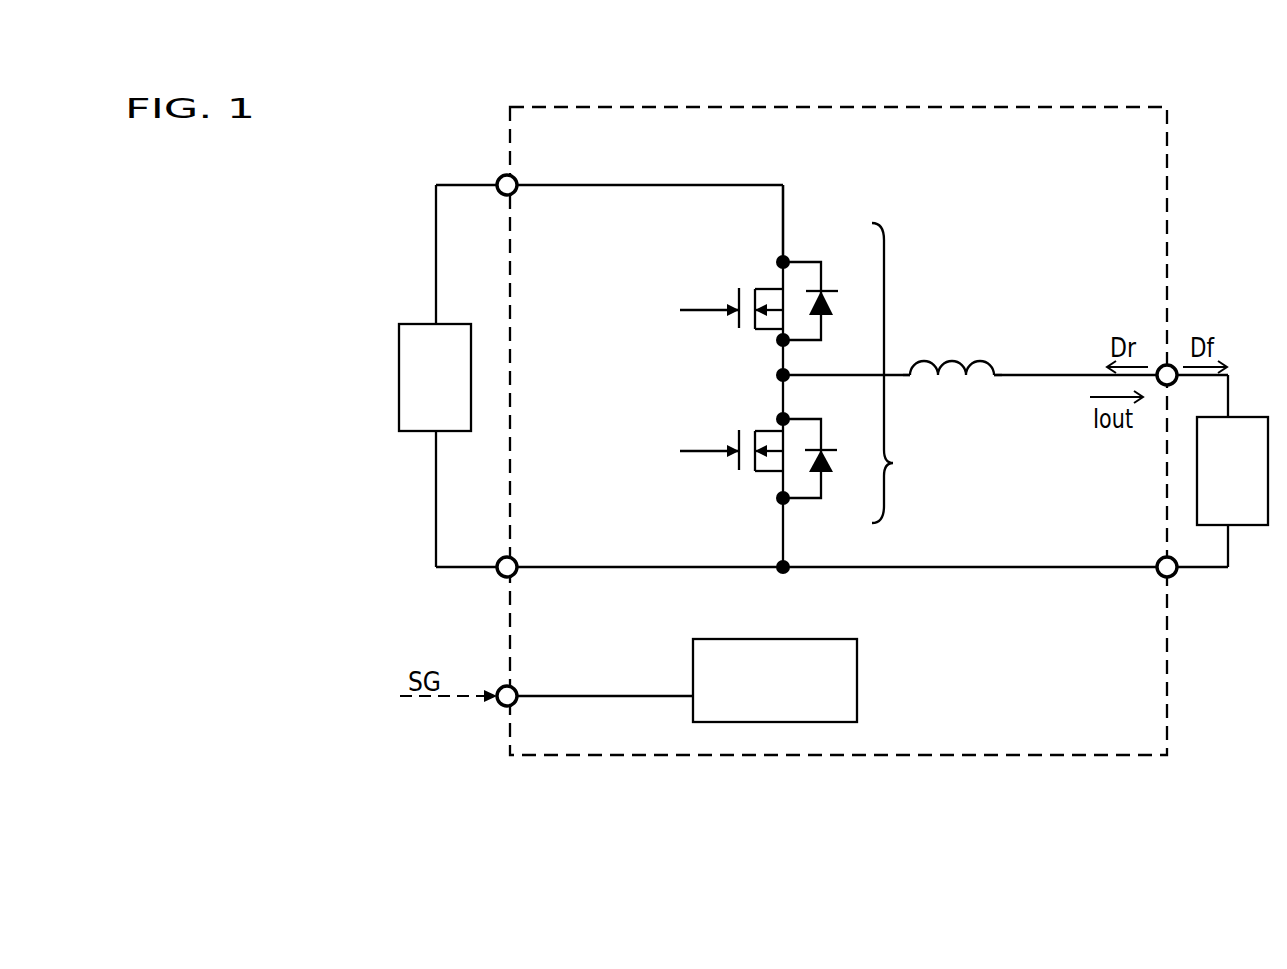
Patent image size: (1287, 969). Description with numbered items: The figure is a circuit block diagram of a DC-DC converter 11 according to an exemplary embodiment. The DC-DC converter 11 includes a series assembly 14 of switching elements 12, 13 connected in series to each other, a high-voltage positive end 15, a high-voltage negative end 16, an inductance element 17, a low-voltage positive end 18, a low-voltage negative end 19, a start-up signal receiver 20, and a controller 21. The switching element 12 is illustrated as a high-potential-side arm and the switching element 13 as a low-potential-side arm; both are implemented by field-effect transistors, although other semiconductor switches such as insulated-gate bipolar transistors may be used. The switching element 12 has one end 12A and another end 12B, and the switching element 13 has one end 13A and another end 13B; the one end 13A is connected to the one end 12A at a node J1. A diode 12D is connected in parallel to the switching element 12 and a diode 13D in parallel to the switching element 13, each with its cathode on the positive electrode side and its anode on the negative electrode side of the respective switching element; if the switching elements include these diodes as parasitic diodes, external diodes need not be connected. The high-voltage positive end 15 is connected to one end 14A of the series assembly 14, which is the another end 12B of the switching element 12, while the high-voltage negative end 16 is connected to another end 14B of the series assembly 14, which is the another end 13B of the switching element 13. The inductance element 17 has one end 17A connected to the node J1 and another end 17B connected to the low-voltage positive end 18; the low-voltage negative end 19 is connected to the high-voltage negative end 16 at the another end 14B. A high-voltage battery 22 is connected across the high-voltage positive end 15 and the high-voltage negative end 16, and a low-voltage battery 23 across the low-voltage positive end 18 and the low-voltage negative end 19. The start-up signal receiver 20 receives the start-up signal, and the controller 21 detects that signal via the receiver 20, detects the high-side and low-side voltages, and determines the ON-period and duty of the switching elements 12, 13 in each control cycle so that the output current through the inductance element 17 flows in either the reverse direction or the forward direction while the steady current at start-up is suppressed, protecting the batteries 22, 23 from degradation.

The DC-DC converter 11 is at (853, 107).
The switching element 12 is at (740, 323).
The one end of switching element 12 12A is at (778, 342).
The another end of switching element 12 12B is at (778, 259).
The diode 12D is at (825, 301).
The switching element 13 is at (738, 467).
The one end of switching element 13 13A is at (711, 423).
The another end of switching element 13 13B is at (746, 517).
The diode 13D is at (826, 455).
The series assembly 14 is at (897, 373).
The one end of series assembly 14A is at (787, 185).
The another end of series assembly 14B is at (778, 573).
The high-voltage positive end 15 is at (497, 175).
The high-voltage negative end 16 is at (497, 580).
The inductance element 17 is at (955, 362).
The one end of inductance element 17A is at (903, 374).
The another end of inductance element 17B is at (1002, 378).
The low-voltage positive end 18 is at (1168, 362).
The low-voltage negative end 19 is at (1170, 578).
The start-up signal receiver 20 is at (495, 700).
The controller 21 is at (857, 683).
The high-voltage battery 22 is at (407, 433).
The low-voltage battery 23 is at (1247, 527).
The node J1 is at (779, 378).